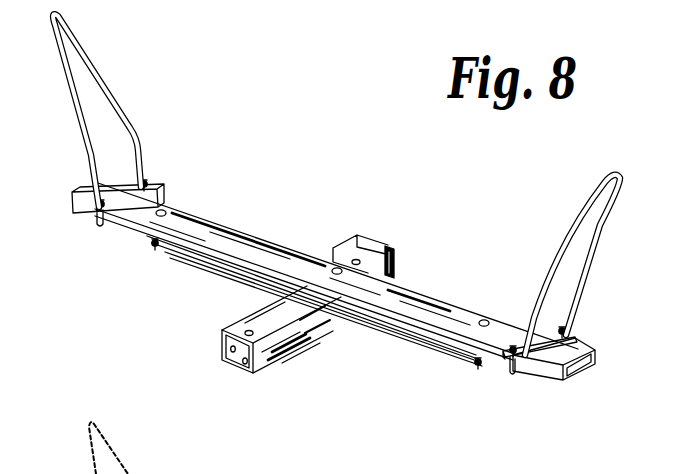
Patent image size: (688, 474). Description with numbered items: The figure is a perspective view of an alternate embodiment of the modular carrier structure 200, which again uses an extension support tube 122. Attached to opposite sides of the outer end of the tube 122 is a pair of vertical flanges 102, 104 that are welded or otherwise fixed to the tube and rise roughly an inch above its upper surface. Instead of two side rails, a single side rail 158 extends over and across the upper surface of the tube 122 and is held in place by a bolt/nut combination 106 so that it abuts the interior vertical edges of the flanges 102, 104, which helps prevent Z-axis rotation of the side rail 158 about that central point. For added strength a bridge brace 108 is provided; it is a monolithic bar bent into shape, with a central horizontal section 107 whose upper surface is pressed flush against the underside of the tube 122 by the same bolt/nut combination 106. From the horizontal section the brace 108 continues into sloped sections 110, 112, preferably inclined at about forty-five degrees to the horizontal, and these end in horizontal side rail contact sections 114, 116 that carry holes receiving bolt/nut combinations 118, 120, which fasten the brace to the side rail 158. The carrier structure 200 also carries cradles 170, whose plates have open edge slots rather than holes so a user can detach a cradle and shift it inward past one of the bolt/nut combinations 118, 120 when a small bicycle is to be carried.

The modular carrier structure 200 is at (357, 95).
The vertical flange 102 is at (357, 235).
The vertical flange 104 is at (392, 246).
The bolt/nut combination 106 is at (336, 266).
The central horizontal section 107 is at (332, 337).
The bridge brace 108 is at (200, 265).
The sloped section 110 is at (231, 278).
The sloped section 112 is at (423, 347).
The side rail contact section 114 is at (149, 242).
The side rail contact section 116 is at (480, 364).
The bolt/nut combination 118 is at (162, 208).
The bolt/nut combination 120 is at (488, 321).
The extension support tube 122 is at (282, 345).
The side rail 158 is at (401, 318).
The cradle 170 is at (604, 222).